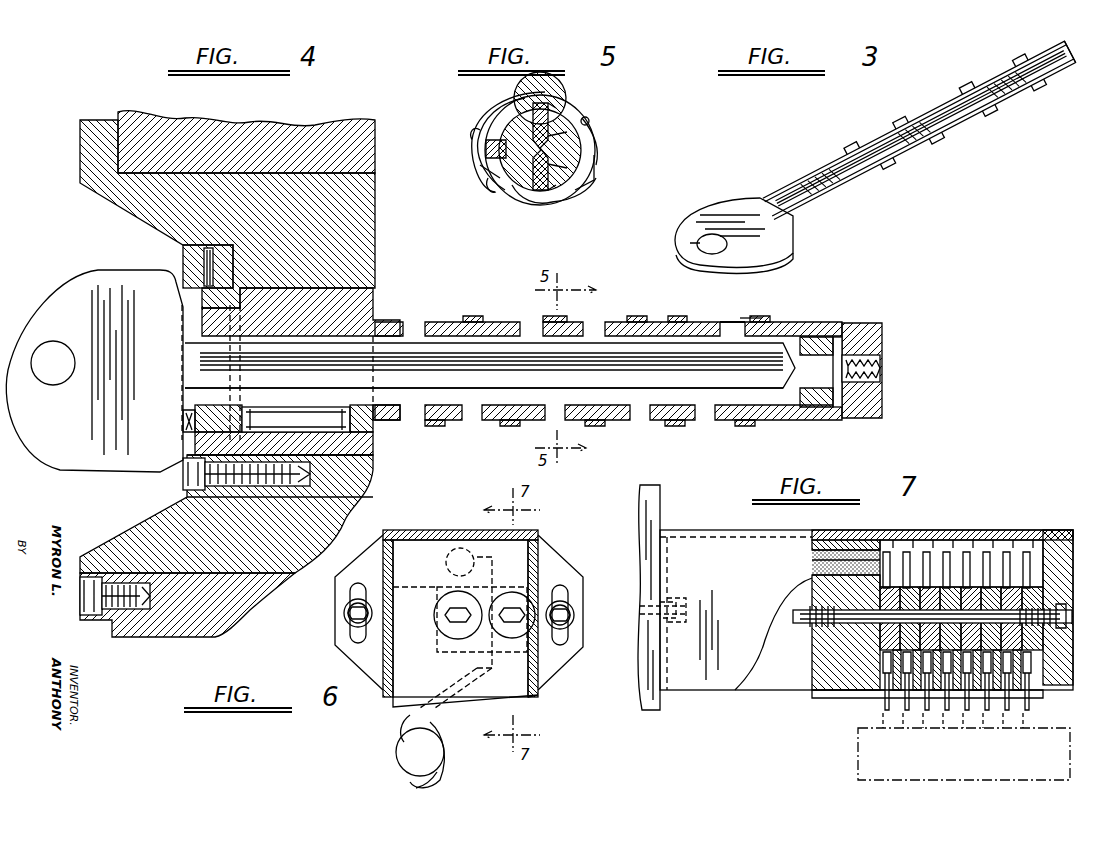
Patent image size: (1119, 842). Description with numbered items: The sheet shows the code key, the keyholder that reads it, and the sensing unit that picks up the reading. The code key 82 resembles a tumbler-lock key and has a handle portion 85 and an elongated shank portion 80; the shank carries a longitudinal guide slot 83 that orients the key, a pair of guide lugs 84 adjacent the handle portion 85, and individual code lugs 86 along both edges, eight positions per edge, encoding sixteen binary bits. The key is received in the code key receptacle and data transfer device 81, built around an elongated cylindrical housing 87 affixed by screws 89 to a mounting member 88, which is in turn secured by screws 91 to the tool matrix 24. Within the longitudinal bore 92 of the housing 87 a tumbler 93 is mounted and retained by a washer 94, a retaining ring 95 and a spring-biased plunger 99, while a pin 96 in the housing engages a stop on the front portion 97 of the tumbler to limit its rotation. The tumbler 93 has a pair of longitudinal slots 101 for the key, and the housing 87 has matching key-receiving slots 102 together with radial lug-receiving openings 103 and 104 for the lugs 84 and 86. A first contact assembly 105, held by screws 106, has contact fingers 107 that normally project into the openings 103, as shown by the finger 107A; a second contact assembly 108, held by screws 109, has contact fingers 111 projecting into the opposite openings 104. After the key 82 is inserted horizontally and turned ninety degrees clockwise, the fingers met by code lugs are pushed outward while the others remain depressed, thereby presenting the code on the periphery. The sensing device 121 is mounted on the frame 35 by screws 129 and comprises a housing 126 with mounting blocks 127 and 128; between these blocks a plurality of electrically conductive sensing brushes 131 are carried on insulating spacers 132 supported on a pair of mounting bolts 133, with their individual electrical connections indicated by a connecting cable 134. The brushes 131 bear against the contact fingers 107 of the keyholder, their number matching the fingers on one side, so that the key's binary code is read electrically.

In FIG. 4, the tool matrix 24 is at (266, 122).
In FIG. 7, the frame 35 is at (662, 520).
In FIG. 4, the shank portion 80 is at (418, 407).
In FIG. 3, the shank portion 80 is at (852, 204).
In FIG. 5, the code key receptacle and data transfer device 81 is at (464, 147).
In FIG. 6, the code key receptacle and data transfer device 81 is at (389, 766).
In FIG. 7, the code key receptacle and data transfer device 81 is at (848, 746).
In FIG. 4, the code key 82 is at (490, 349).
In FIG. 5, the code key 82 is at (544, 192).
In FIG. 3, the code key 82 is at (927, 131).
In FIG. 5, the guide slot 83 is at (590, 156).
In FIG. 3, the guide slot 83 is at (1085, 43).
In FIG. 4, the guide lugs 84 is at (422, 326).
In FIG. 4, the handle portion 85 is at (52, 312).
In FIG. 3, the handle portion 85 is at (792, 250).
In FIG. 4, the code lugs 86 is at (633, 418).
In FIG. 5, the code lugs 86 is at (552, 105).
In FIG. 3, the code lugs 86 is at (955, 109).
In FIG. 4, the housing 87 is at (368, 428).
In FIG. 5, the housing 87 is at (520, 196).
In FIG. 4, the mounting member 88 is at (378, 280).
In FIG. 4, the screws 89 is at (186, 472).
In FIG. 4, the screws 91 is at (88, 598).
In FIG. 4, the longitudinal bore 92 is at (840, 326).
In FIG. 4, the tumbler 93 is at (836, 410).
In FIG. 4, the washer 94 is at (200, 424).
In FIG. 4, the retaining ring 95 is at (186, 430).
In FIG. 4, the pin 96 is at (206, 260).
In FIG. 4, the front portion of the tumbler 97 is at (205, 408).
In FIG. 4, the spring-biased plunger 99 is at (372, 466).
In FIG. 4, the longitudinal slots 101 is at (790, 408).
In FIG. 5, the longitudinal slots 101 is at (562, 118).
In FIG. 5, the key-receiving slots 102 is at (488, 150).
In FIG. 4, the lug-receiving openings 103 is at (748, 322).
In FIG. 5, the lug-receiving openings 103 is at (520, 108).
In FIG. 5, the lug-receiving openings 104 is at (578, 182).
In FIG. 5, the first contact assembly 105 is at (490, 168).
In FIG. 5, the screws 106 is at (490, 182).
In FIG. 5, the contact fingers 107 is at (482, 104).
In FIG. 6, the contact fingers 107 is at (402, 735).
In FIG. 7, the contact fingers 107 is at (1015, 718).
In FIG. 4, the contact finger 107A is at (712, 324).
In FIG. 5, the second contact assembly 108 is at (598, 142).
In FIG. 5, the screws 109 is at (590, 121).
In FIG. 5, the contact fingers 111 is at (596, 180).
In FIG. 6, the contact fingers 111 is at (445, 784).
In FIG. 6, the sensing device 121 is at (568, 546).
In FIG. 7, the sensing device 121 is at (983, 525).
In FIG. 6, the housing 126 is at (430, 530).
In FIG. 7, the housing 126 is at (928, 530).
In FIG. 7, the mounting block 127 is at (812, 668).
In FIG. 7, the mounting block 128 is at (1060, 530).
In FIG. 6, the screws 129 is at (346, 618).
In FIG. 7, the screws 129 is at (690, 612).
In FIG. 6, the sensing brushes 131 is at (430, 708).
In FIG. 7, the sensing brushes 131 is at (945, 712).
In FIG. 7, the insulating spacers 132 is at (1008, 545).
In FIG. 7, the mounting bolts 133 is at (798, 622).
In FIG. 7, the connecting cable 134 is at (814, 562).